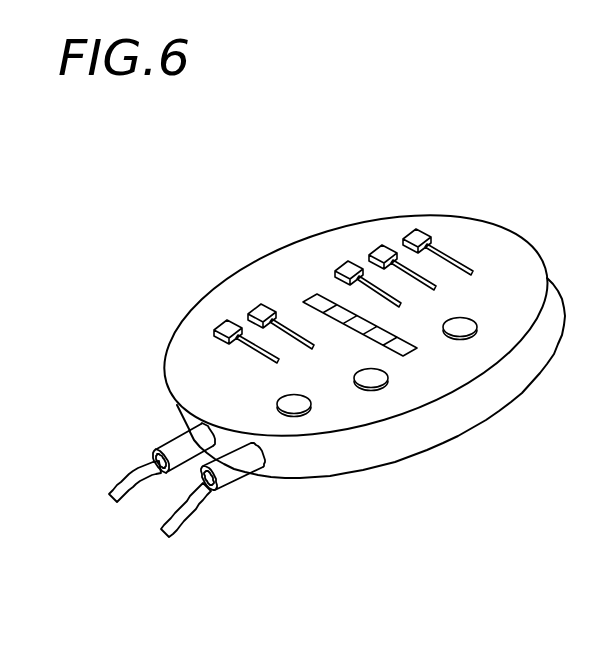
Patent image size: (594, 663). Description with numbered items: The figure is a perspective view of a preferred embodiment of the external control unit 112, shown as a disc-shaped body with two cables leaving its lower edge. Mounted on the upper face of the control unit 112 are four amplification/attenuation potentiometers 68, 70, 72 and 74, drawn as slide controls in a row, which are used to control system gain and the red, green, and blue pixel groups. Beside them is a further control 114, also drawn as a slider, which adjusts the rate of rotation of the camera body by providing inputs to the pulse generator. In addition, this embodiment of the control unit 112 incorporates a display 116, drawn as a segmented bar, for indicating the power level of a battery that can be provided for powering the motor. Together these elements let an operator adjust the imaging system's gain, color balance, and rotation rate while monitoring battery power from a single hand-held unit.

The external control unit 112 is at (214, 157).
The control 114 is at (218, 323).
The amplification/attenuation potentiometer 68 is at (257, 307).
The display 116 is at (316, 294).
The amplification/attenuation potentiometer 70 is at (347, 262).
The amplification/attenuation potentiometer 72 is at (382, 247).
The amplification/attenuation potentiometer 74 is at (416, 231).